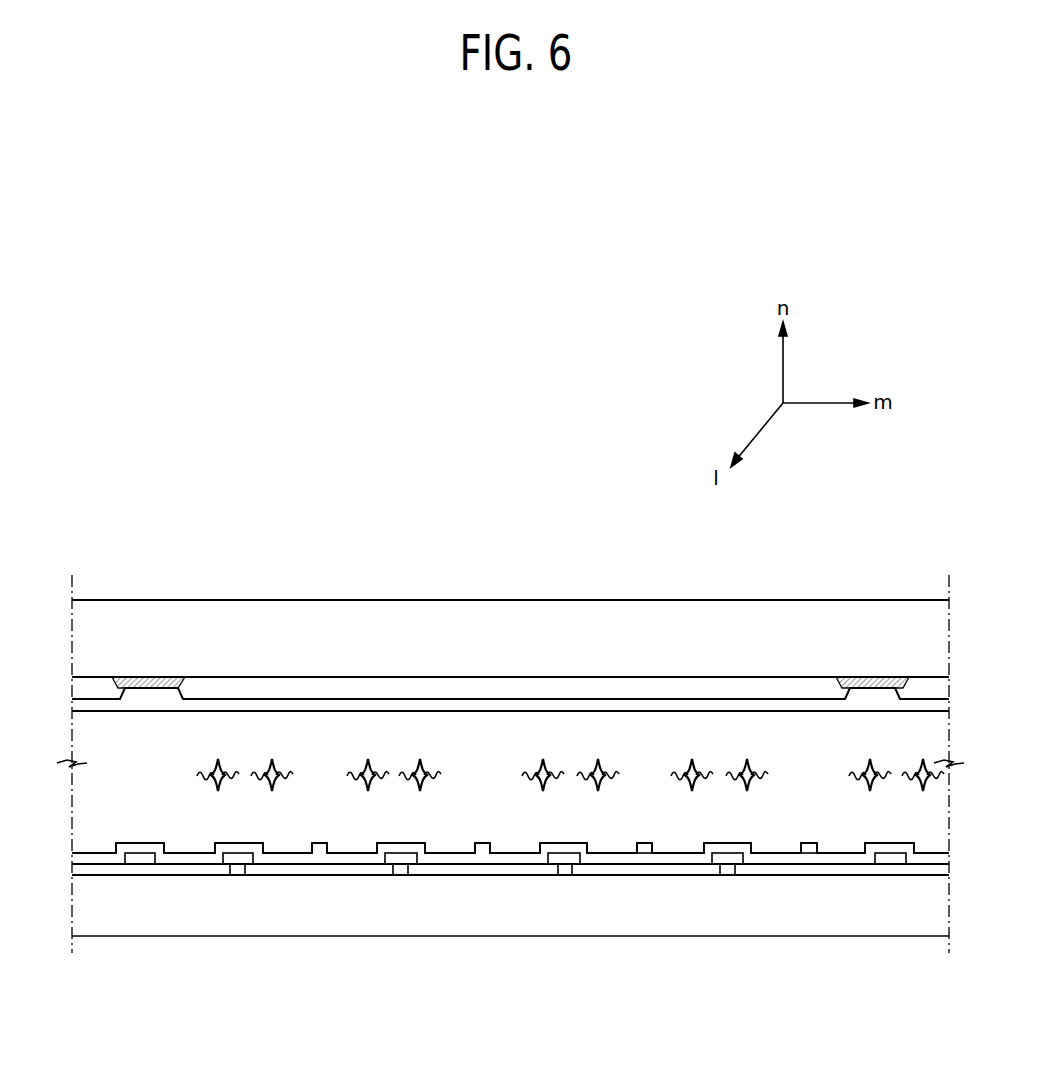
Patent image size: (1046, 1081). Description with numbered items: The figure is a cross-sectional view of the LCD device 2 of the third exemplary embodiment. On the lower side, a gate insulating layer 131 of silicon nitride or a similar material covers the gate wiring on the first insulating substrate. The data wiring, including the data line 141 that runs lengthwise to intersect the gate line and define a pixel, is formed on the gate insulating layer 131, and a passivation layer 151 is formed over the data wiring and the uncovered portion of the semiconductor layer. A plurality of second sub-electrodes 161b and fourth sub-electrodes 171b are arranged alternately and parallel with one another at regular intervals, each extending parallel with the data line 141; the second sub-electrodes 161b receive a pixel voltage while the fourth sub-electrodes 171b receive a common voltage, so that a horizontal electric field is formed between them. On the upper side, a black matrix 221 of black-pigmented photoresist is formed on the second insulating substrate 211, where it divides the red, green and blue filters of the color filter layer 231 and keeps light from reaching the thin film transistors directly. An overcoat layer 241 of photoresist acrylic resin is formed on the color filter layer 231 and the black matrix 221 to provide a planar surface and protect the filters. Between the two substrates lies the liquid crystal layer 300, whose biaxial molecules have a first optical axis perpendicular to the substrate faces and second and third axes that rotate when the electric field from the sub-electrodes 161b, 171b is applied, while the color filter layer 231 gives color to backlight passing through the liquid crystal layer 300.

The LCD device 2 is at (98, 538).
The second insulating substrate 211 is at (658, 604).
The black matrix 221 is at (156, 683).
The color filter layer 231 is at (469, 685).
The overcoat layer 241 is at (567, 703).
The liquid crystal layer 300 is at (368, 764).
The gate insulating layer 131 is at (484, 870).
The data line 141 is at (138, 862).
The passivation layer 151 is at (582, 850).
The second sub-electrode 161b is at (648, 848).
The fourth sub-electrode 171b is at (244, 868).